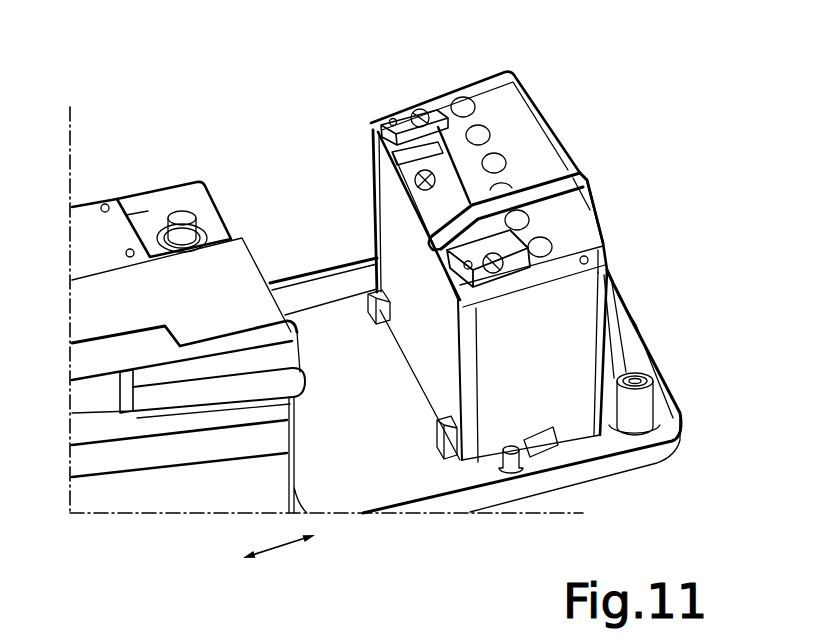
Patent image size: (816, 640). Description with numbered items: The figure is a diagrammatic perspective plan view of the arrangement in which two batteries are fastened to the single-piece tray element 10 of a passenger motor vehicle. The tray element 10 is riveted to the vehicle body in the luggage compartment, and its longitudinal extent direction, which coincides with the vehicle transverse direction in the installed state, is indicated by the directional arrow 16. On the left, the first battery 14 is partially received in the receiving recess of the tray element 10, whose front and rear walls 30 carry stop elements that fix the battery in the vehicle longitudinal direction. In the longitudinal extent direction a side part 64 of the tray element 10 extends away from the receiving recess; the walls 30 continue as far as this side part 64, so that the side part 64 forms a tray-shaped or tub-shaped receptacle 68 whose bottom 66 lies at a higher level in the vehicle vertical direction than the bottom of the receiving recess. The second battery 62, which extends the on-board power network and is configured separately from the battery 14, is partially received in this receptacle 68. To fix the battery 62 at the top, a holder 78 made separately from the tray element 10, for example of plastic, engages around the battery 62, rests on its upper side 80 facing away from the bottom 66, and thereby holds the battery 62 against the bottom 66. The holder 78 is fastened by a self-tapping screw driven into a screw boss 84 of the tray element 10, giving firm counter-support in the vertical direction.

The tray element 10 is at (601, 488).
The battery 14 is at (117, 197).
The directional arrow 16 is at (285, 547).
The wall 30 is at (275, 280).
The second battery 62 is at (531, 80).
The side part 64 is at (322, 252).
The bottom 66 is at (422, 473).
The receptacle 68 is at (343, 299).
The holder 78 is at (583, 173).
The upper side 80 is at (547, 150).
The screw boss 84 is at (627, 330).